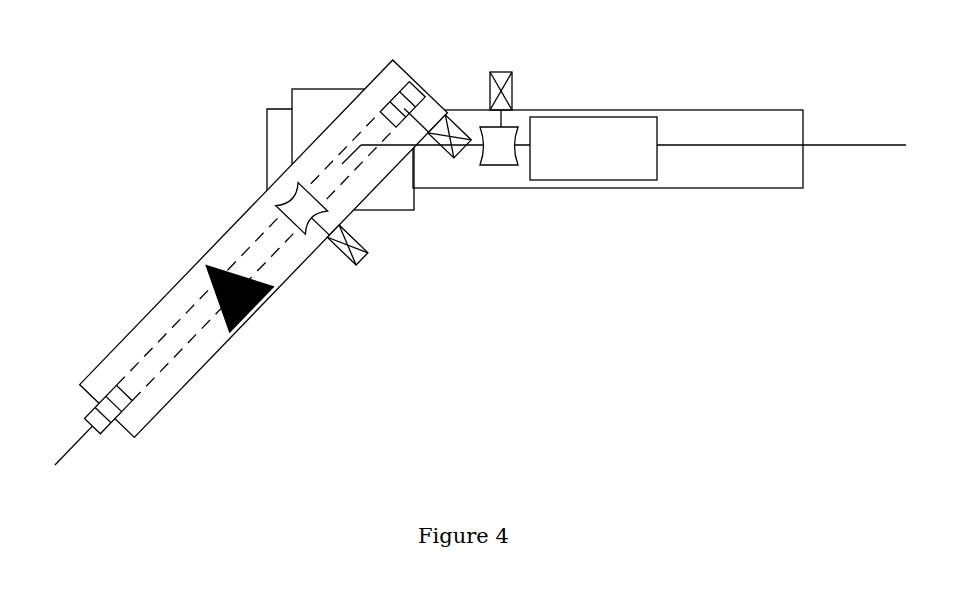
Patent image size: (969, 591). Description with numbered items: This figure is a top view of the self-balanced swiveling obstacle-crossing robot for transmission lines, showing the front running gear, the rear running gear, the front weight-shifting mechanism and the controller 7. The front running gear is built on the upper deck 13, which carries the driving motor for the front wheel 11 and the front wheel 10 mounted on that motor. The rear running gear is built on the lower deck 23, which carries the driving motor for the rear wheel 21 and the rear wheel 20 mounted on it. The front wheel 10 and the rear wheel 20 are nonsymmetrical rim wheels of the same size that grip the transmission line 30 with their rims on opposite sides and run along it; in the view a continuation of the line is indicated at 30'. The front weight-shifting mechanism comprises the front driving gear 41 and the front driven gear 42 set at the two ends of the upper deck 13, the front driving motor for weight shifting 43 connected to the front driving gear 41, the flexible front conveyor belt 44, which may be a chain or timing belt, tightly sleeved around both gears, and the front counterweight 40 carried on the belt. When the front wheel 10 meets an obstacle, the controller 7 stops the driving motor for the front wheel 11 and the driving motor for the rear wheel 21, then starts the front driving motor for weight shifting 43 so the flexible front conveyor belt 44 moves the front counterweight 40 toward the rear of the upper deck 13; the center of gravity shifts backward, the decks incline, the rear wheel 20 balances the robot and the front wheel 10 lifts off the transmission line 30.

The controller 7 is at (604, 120).
The front wheel 10 is at (281, 190).
The driving motor for the front wheel 11 is at (366, 258).
The upper deck 13 is at (211, 244).
The rear wheel 20 is at (501, 168).
The driving motor for the rear wheel 21 is at (491, 70).
The lower deck 23 is at (743, 116).
The transmission line 30 is at (624, 105).
The optical axis extension 30' is at (71, 385).
The front counterweight 40 is at (259, 313).
The front driving gear 41 is at (391, 90).
The front driven gear 42 is at (123, 414).
The front driving motor for weight shifting 43 is at (452, 172).
The flexible front conveyor belt 44 is at (157, 340).